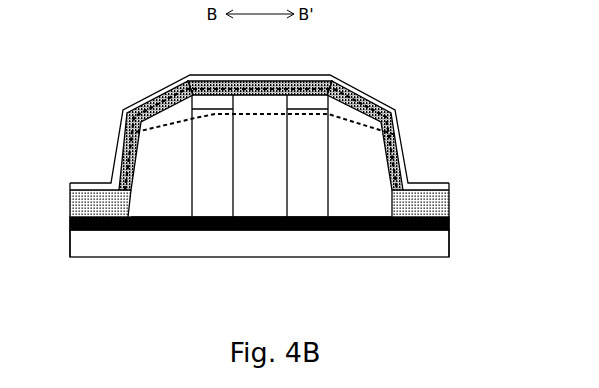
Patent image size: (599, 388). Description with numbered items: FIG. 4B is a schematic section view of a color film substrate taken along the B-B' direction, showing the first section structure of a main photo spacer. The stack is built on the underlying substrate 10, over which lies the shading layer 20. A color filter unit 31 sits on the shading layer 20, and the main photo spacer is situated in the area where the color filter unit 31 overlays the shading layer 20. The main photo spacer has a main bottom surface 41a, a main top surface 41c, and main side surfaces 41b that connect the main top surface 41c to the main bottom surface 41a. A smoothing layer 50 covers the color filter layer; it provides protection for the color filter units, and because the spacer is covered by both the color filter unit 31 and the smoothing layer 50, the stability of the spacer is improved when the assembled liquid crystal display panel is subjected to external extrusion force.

The underlying substrate 10 is at (435, 243).
The shading layer 20 is at (435, 227).
The color filter unit 31 is at (435, 199).
The smoothing layer 50 is at (433, 187).
The main bottom surface 41a is at (312, 230).
The main side surfaces 41b is at (124, 172).
The main top surface 41c is at (275, 89).